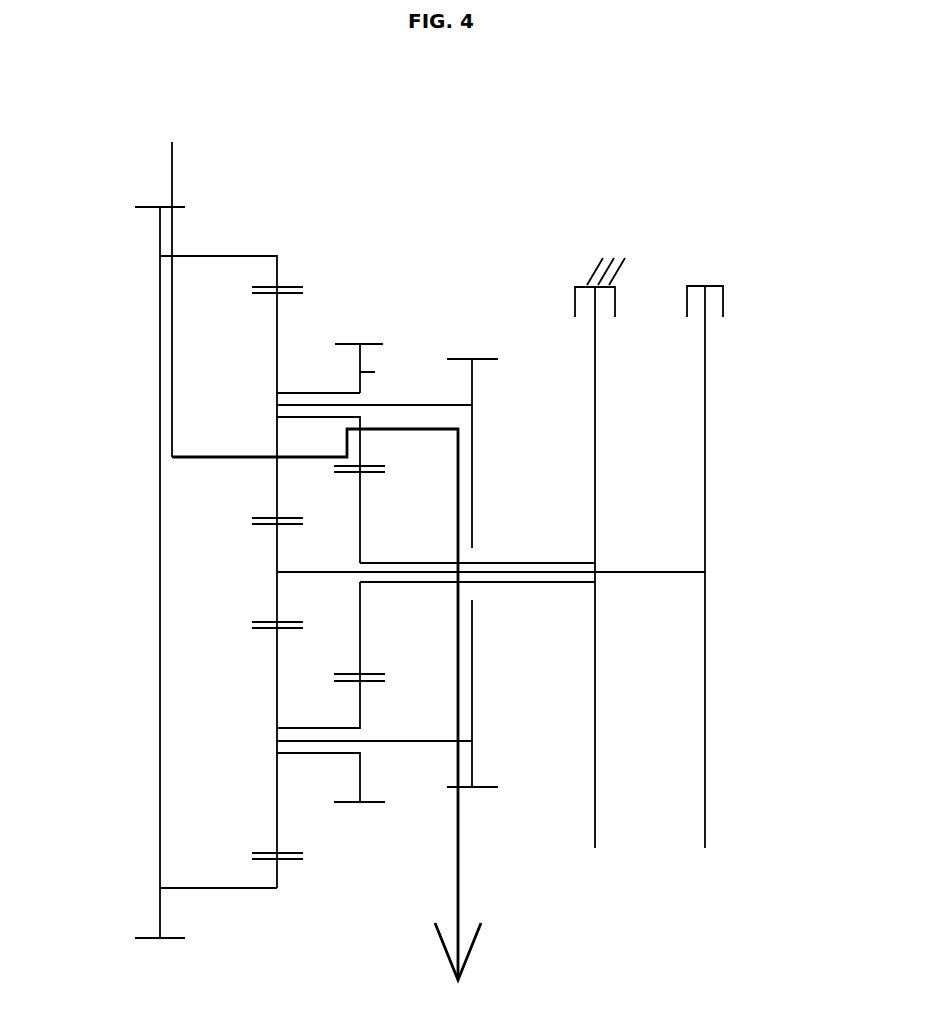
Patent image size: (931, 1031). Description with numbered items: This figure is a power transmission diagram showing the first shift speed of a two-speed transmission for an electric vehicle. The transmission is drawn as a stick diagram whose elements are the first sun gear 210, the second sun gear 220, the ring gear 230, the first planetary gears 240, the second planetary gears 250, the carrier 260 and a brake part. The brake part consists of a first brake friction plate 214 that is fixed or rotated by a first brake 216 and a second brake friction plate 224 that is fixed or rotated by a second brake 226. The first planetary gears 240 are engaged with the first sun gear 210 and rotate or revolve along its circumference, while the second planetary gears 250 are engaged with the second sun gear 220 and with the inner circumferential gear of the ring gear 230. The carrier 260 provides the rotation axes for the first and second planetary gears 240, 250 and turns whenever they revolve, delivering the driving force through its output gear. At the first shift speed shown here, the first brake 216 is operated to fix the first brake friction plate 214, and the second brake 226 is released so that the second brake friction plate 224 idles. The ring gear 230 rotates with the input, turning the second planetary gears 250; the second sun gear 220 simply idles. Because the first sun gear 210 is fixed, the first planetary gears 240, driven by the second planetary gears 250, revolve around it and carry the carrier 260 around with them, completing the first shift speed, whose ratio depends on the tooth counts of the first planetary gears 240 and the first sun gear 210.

The first sun gear 210 is at (360, 651).
The first brake friction plate 214 is at (597, 367).
The first brake 216 is at (575, 293).
The second sun gear 220 is at (277, 548).
The second brake friction plate 224 is at (705, 378).
The second brake 226 is at (725, 302).
The ring gear 230 is at (227, 256).
The first planetary gears 240 is at (375, 372).
The second planetary gears 250 is at (277, 330).
The carrier 260 is at (423, 405).